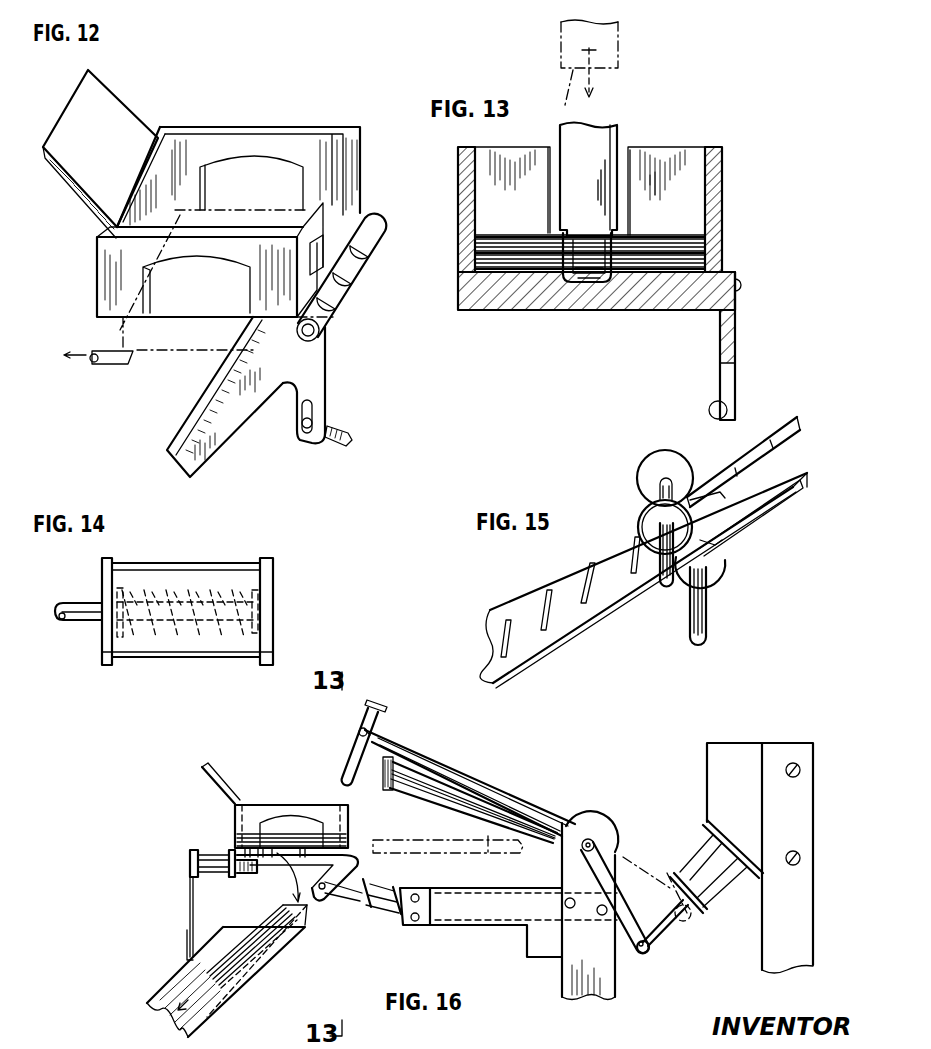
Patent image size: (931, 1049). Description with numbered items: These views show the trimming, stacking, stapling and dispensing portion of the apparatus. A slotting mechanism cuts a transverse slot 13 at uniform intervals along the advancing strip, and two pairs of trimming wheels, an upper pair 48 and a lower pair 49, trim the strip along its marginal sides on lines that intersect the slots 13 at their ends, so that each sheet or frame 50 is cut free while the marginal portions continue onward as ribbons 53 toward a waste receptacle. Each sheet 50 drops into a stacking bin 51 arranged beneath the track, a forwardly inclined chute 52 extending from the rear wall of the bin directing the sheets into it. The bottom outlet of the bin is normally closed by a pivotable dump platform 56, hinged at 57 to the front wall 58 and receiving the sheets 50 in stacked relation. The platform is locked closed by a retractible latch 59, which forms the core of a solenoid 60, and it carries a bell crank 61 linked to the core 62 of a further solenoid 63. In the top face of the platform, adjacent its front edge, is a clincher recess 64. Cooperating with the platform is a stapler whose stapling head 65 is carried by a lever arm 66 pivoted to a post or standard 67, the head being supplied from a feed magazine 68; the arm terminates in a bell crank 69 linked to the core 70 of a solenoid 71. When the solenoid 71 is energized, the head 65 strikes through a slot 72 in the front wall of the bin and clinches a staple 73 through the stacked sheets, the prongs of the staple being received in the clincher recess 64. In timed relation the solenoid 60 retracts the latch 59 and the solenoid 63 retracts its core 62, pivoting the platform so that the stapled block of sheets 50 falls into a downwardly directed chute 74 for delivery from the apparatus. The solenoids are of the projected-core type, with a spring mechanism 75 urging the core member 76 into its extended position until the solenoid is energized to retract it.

In FIG. 15, the transverse slot 13 is at (590, 563).
In FIG. 15, the upper pair of trimming wheels 48 is at (646, 477).
In FIG. 15, the lower pair of trimming wheels 49 is at (713, 588).
In FIG. 13, the sheet or frame 50 is at (690, 236).
In FIG. 15, the sheet or frame 50 is at (713, 498).
In FIG. 16, the sheet or frame 50 is at (237, 838).
In FIG. 12, the stacking bin 51 is at (97, 257).
In FIG. 13, the stacking bin 51 is at (722, 238).
In FIG. 16, the stacking bin 51 is at (330, 804).
In FIG. 12, the forwardly inclined chute 52 is at (67, 178).
In FIG. 16, the forwardly inclined chute 52 is at (202, 767).
In FIG. 15, the ribbons 53 is at (797, 422).
In FIG. 12, the pivotable dump platform 56 is at (190, 414).
In FIG. 13, the pivotable dump platform 56 is at (461, 312).
In FIG. 12, the hinge 57 is at (356, 272).
In FIG. 12, the front wall 58 is at (350, 175).
In FIG. 13, the front wall 58 is at (666, 161).
In FIG. 12, the retractible latch 59 is at (110, 365).
In FIG. 16, the retractible latch 59 is at (248, 873).
In FIG. 16, the solenoid 60 is at (207, 865).
In FIG. 12, the bell crank 61 is at (318, 396).
In FIG. 13, the bell crank 61 is at (736, 336).
In FIG. 16, the bell crank 61 is at (316, 898).
In FIG. 12, the core 62 is at (346, 442).
In FIG. 16, the solenoid 63 is at (383, 916).
In FIG. 13, the clincher recess 64 is at (594, 284).
In FIG. 13, the stapling head 65 is at (578, 130).
In FIG. 16, the stapling head 65 is at (360, 758).
In FIG. 16, the lever arm 66 is at (438, 762).
In FIG. 16, the post or standard 67 is at (570, 981).
In FIG. 16, the feed magazine 68 is at (427, 801).
In FIG. 16, the bell crank 69 is at (650, 948).
In FIG. 16, the core 70 is at (677, 918).
In FIG. 16, the solenoid 71 is at (690, 880).
In FIG. 13, the slot 72 is at (620, 152).
In FIG. 13, the staple 73 is at (570, 284).
In FIG. 16, the downwardly directed chute 74 is at (241, 981).
In FIG. 14, the spring mechanism 75 is at (200, 634).
In FIG. 14, the core member 76 is at (80, 624).
In FIG. 15, the strip S is at (607, 613).